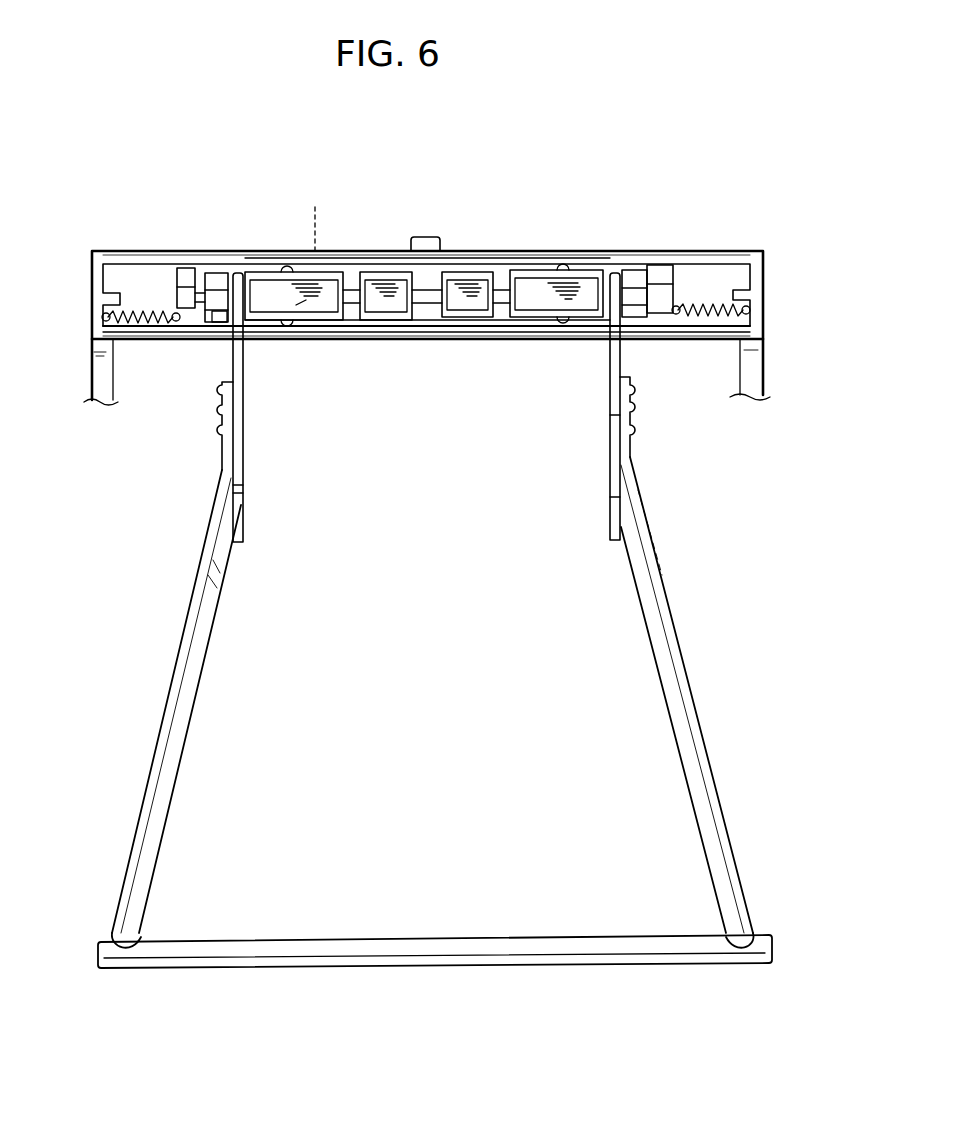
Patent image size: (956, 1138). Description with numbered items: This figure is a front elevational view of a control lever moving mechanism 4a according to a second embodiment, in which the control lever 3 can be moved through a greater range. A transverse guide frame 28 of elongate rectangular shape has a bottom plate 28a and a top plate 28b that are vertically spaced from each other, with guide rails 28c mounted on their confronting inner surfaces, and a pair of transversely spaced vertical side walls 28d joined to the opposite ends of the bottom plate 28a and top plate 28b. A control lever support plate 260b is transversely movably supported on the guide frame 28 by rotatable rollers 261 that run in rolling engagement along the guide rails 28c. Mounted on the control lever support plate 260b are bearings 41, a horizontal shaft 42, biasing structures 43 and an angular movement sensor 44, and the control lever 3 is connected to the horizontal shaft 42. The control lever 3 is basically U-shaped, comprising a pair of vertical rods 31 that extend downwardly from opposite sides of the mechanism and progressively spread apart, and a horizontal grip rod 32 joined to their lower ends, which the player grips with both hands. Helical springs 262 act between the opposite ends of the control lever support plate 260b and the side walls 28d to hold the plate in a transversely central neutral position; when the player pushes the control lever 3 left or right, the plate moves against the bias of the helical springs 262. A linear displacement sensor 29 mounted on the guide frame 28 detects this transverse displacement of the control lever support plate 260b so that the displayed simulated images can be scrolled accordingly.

The control lever 3 is at (435, 718).
The control lever moving mechanism 4a is at (520, 160).
The transverse guide frame 28 is at (630, 246).
The bottom plate 28a is at (402, 339).
The top plate 28b is at (373, 252).
The guide rails 28c is at (313, 296).
The vertical side walls 28d is at (95, 293).
The linear displacement sensor 29 is at (430, 238).
The vertical rods 31 is at (650, 590).
The horizontal grip rod 32 is at (406, 937).
The bearings 41 is at (632, 268).
The horizontal shaft 42 is at (427, 294).
The biasing structures 43 is at (542, 280).
The angular movement sensor 44 is at (177, 292).
The control lever support plate 260b is at (200, 275).
The rotatable rollers 261 is at (280, 268).
The helical springs 262 is at (142, 328).